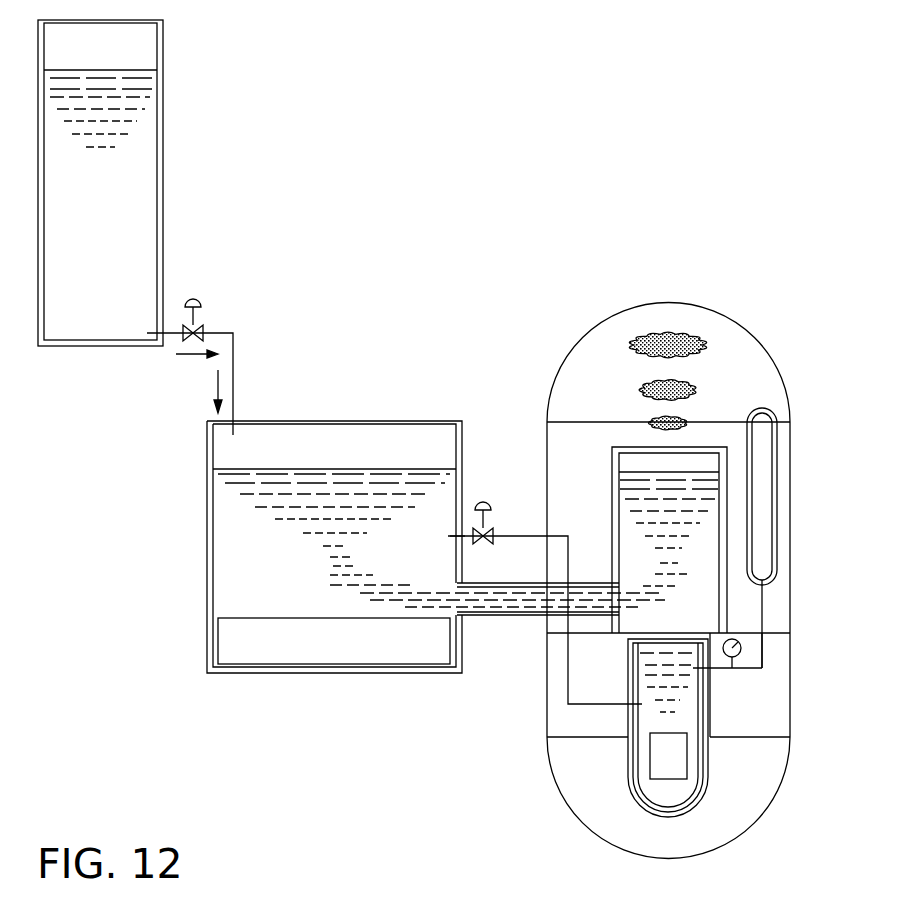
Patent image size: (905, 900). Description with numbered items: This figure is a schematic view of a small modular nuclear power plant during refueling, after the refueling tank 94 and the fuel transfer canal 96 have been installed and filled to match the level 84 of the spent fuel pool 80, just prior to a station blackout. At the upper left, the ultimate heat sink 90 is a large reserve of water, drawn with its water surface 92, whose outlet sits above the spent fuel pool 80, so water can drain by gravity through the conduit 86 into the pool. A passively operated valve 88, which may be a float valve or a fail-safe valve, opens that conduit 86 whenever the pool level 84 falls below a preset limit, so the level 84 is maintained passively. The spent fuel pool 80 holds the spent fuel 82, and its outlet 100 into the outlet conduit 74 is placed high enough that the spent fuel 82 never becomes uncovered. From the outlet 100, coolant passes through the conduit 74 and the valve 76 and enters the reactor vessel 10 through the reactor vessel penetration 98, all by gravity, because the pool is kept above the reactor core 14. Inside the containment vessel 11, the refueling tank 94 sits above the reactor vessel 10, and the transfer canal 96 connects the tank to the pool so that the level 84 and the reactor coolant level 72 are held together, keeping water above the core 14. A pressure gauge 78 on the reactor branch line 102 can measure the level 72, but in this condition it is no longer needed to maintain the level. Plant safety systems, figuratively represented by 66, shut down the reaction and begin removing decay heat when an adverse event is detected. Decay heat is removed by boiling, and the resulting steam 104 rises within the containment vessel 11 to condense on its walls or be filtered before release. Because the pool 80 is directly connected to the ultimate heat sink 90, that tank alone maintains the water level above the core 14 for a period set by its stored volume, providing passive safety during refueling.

The reactor vessel 10 is at (627, 750).
The containment vessel 11 is at (563, 358).
The reactor core 14 is at (680, 760).
The plant safety systems 66 is at (761, 410).
The water level in the reactor coolant system 72 is at (655, 470).
The outlet conduit 74 is at (507, 536).
The valve 76 is at (483, 498).
The pressure gauge 78 is at (742, 650).
The spent fuel pool 80 is at (353, 426).
The spent fuel 82 is at (231, 646).
The spent fuel pool level 84 is at (240, 468).
The conduit 86 is at (234, 367).
The passively operated valve 88 is at (197, 298).
The ultimate heat sink 90 is at (163, 177).
The liquid in storage tank 92 is at (127, 70).
The refueling tank 94 is at (613, 516).
The fuel transfer canal 96 is at (528, 618).
The reactor vessel penetration 98 is at (627, 707).
The outlet 100 is at (458, 540).
The reactor branch line 102 is at (720, 669).
The steam 104 is at (658, 337).